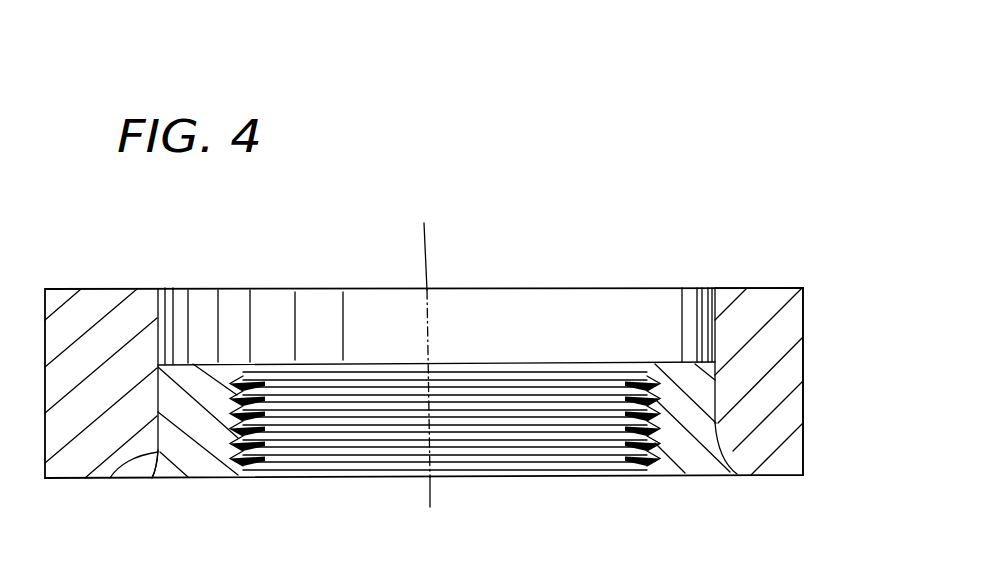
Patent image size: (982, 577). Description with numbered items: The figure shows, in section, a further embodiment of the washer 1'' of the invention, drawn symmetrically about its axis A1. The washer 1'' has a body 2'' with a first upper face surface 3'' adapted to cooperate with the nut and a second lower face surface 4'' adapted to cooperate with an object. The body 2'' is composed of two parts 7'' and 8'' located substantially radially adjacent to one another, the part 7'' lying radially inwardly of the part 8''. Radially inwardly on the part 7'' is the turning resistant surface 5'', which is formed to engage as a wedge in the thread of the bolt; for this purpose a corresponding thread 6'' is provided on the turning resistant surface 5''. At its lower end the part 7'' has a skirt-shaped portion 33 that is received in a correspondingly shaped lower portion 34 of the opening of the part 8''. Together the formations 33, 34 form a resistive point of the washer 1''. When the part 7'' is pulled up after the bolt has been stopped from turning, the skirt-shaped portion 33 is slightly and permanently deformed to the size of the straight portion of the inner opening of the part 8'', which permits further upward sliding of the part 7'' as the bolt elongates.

The washer 1'' is at (403, 344).
The body 2'' is at (776, 255).
The first upper face surface 3'' is at (712, 316).
The second lower face surface 4'' is at (771, 413).
The turning resistant surface 5'' is at (451, 452).
The thread 6'' is at (249, 453).
The part 7'' is at (696, 448).
The part 8'' is at (828, 381).
The skirt-shaped portion 33 is at (170, 480).
The lower portion of an opening 34 is at (105, 480).
The axis A1 is at (426, 257).